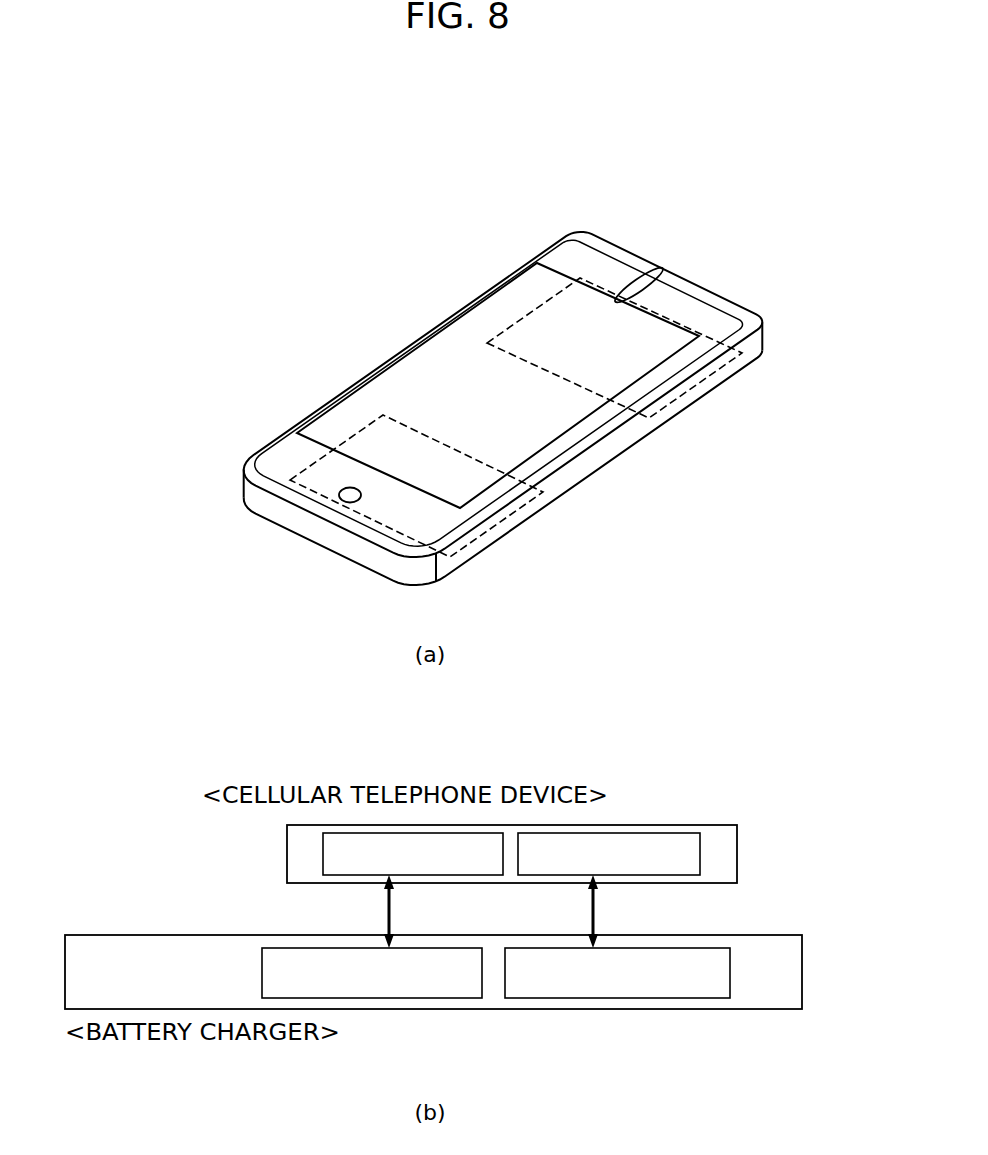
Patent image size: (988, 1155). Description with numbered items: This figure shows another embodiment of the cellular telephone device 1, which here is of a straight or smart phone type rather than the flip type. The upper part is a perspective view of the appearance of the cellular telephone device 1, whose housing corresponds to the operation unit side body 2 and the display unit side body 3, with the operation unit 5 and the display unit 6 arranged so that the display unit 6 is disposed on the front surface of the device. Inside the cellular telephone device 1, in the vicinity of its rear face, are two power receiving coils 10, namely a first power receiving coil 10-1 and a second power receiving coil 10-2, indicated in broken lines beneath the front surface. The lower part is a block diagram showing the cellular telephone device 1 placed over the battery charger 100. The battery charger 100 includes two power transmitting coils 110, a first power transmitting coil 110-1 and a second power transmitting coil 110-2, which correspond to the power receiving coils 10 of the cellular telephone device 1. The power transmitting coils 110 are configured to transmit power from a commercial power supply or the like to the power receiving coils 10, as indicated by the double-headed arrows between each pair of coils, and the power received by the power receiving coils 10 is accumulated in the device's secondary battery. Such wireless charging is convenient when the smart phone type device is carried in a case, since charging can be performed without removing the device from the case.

The cellular telephone device 1 is at (494, 485).
The operation unit side body 2 is at (503, 381).
The display unit side body 3 is at (558, 250).
The operation unit 5 is at (498, 382).
The display unit 6 is at (457, 333).
The power receiving coils 10 is at (494, 577).
The first power receiving coil 10-1 is at (693, 383).
The second power receiving coil 10-2 is at (497, 527).
The battery charger 100 is at (474, 973).
The power transmitting coils 110 is at (496, 1010).
The first power transmitting coil 110-1 is at (413, 1000).
The second power transmitting coil 110-2 is at (640, 1000).